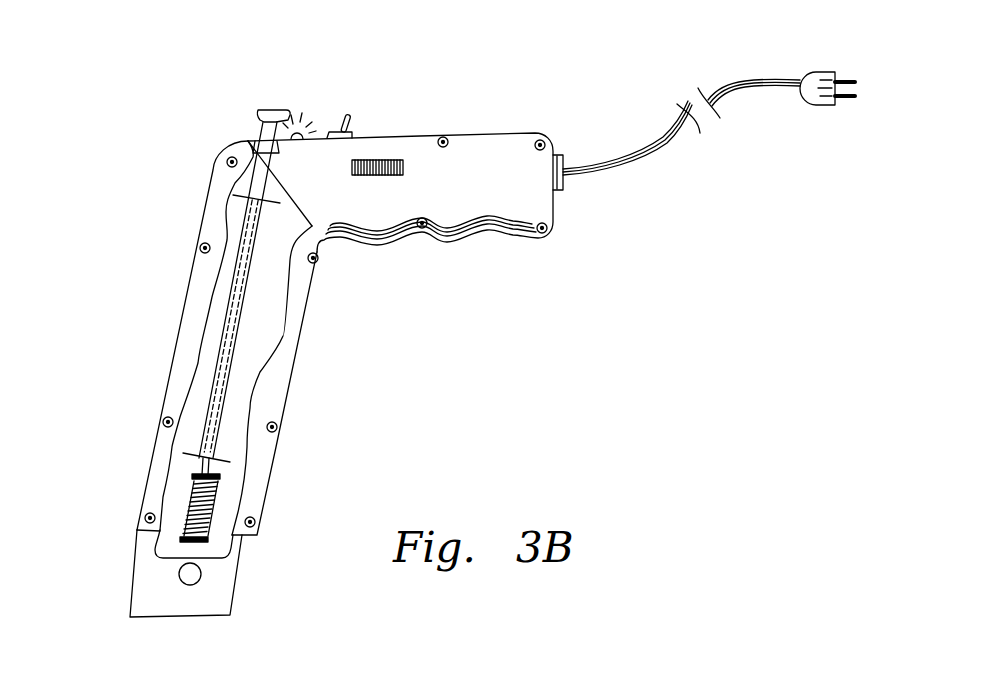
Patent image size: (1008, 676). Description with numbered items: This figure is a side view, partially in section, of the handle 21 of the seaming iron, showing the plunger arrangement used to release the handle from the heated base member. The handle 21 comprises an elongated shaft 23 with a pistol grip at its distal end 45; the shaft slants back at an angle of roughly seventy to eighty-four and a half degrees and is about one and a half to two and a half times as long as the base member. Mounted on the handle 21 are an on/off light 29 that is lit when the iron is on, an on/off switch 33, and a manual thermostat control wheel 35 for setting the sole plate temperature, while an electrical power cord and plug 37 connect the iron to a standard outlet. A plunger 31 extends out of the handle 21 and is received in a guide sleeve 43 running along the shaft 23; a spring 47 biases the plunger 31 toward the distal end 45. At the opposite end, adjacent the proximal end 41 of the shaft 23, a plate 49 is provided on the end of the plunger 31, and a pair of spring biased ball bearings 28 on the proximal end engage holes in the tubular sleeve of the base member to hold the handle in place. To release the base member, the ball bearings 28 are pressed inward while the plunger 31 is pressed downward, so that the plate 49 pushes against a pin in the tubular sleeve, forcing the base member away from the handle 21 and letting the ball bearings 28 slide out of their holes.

The handle 21 is at (554, 114).
The elongated shaft 23 is at (178, 328).
The spring biased ball bearings 28 is at (188, 574).
The on/off light 29 is at (302, 122).
The plunger 31 is at (278, 108).
The on/off switch 33 is at (355, 123).
The manual thermostat control wheel 35 is at (378, 175).
The electrical power cord and plug 37 is at (773, 93).
The proximal end 41 is at (243, 567).
The guide sleeve 43 is at (240, 347).
The distal end 45 is at (202, 219).
The spring 47 is at (188, 506).
The plate 49 is at (187, 550).